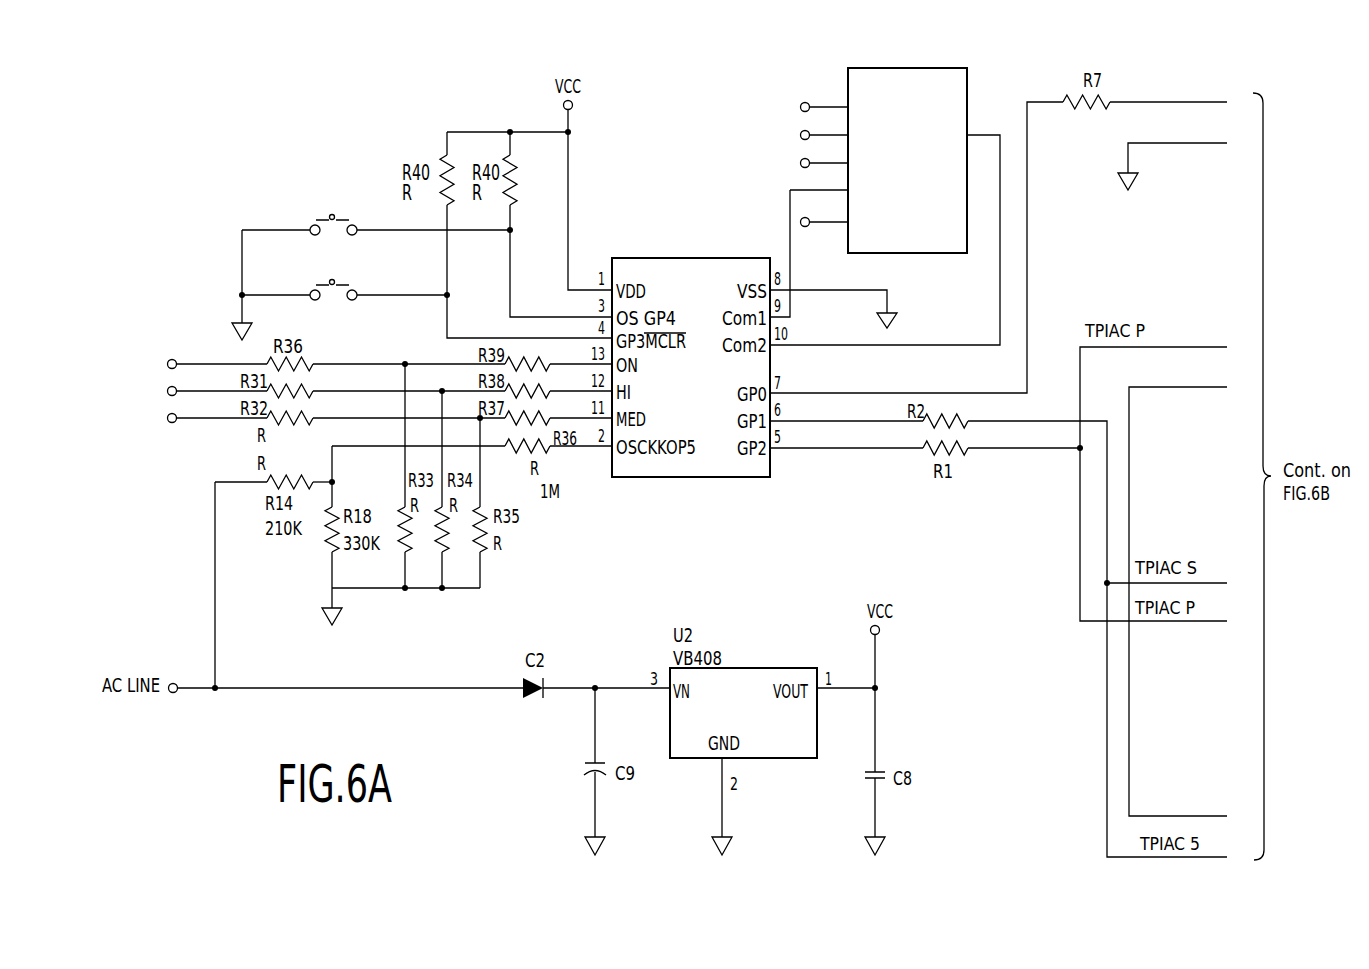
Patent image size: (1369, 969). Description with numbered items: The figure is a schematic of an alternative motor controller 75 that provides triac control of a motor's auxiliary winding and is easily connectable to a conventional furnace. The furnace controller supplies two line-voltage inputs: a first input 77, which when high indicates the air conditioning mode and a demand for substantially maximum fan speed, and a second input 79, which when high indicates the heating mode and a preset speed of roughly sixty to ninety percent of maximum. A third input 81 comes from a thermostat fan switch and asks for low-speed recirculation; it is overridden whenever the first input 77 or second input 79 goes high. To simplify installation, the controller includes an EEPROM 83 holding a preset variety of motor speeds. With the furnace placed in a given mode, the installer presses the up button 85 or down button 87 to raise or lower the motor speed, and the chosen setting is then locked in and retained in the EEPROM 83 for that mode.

The motor controller 75 is at (326, 96).
The first input 77 is at (178, 389).
The second input 79 is at (172, 423).
The third input 81 is at (171, 357).
The EEPROM 83 is at (865, 75).
The up button 85 is at (313, 213).
The down button 87 is at (360, 277).